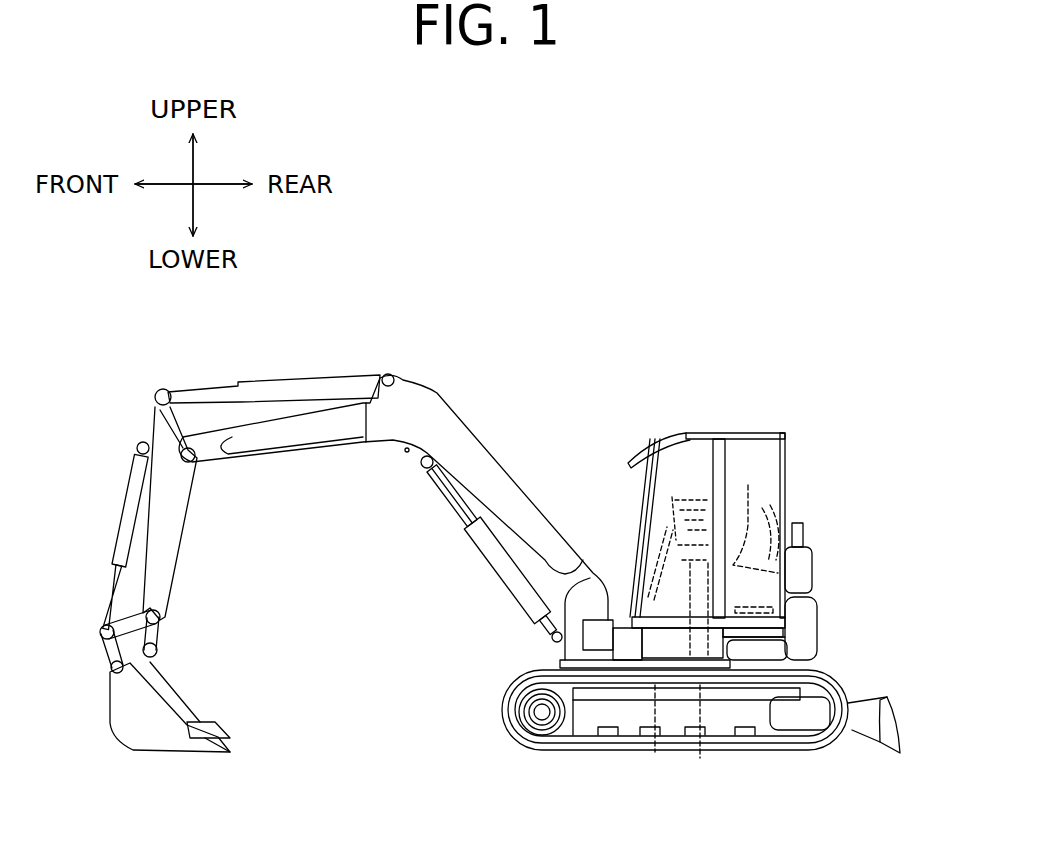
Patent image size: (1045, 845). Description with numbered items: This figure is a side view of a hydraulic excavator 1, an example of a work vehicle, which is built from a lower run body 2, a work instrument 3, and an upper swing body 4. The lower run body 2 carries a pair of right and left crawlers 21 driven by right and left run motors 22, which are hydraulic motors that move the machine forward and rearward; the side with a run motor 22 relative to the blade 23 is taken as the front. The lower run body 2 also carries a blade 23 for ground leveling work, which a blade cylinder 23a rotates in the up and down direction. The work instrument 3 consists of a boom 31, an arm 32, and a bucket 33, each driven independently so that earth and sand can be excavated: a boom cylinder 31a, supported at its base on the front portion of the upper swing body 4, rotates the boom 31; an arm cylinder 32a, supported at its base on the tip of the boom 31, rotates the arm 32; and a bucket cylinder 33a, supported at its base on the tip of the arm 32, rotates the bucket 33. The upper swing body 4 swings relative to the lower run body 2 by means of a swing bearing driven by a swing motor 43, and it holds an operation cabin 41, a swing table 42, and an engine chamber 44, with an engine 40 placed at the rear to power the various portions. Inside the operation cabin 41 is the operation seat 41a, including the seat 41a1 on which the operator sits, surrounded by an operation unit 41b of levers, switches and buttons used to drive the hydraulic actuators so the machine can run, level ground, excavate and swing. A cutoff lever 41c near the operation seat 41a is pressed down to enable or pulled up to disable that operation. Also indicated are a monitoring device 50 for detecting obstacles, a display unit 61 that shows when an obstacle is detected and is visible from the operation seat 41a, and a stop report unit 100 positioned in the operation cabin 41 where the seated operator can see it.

The hydraulic excavator 1 is at (808, 342).
The lower run body 2 is at (495, 684).
The work instrument 3 is at (286, 516).
The upper swing body 4 is at (809, 465).
The crawlers 21 is at (500, 705).
The run motors 22 is at (537, 752).
The blade 23 is at (887, 698).
The blade cylinder 23a is at (812, 674).
The boom 31 is at (325, 445).
The boom cylinder 31a is at (508, 581).
The arm 32 is at (173, 548).
The arm cylinder 32a is at (300, 380).
The bucket 33 is at (120, 728).
The bucket cylinder 33a is at (130, 500).
The engine 40 is at (782, 610).
The operation cabin 41 is at (713, 427).
The operation seat 41a is at (750, 515).
The seat 41a1 is at (700, 760).
The operation unit 41b is at (648, 495).
The cutoff lever 41c is at (640, 550).
The swing table 42 is at (573, 668).
The swing motor 43 is at (653, 753).
The engine chamber 44 is at (813, 560).
The monitoring device 50 is at (806, 532).
The display unit 61 is at (690, 500).
The stop report unit 100 is at (674, 518).